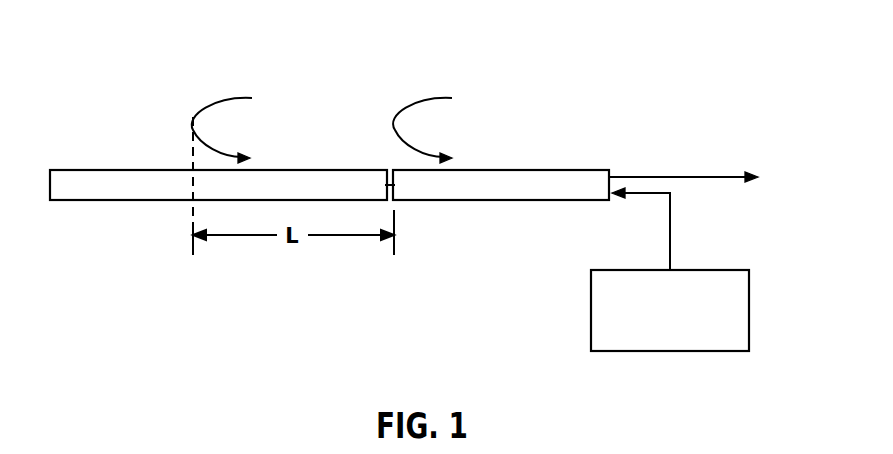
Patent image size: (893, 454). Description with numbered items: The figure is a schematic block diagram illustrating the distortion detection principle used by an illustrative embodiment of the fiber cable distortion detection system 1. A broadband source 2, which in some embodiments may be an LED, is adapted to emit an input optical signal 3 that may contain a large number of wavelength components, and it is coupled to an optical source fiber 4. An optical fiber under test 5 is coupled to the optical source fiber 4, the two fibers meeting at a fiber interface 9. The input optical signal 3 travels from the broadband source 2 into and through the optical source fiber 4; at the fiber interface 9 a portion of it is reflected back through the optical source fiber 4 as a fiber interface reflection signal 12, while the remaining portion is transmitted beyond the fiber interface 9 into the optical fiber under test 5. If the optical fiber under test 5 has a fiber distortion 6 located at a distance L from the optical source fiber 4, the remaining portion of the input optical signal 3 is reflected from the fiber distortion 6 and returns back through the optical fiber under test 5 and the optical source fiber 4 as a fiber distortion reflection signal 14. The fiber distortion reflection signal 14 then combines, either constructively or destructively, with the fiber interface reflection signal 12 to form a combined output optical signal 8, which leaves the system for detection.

The fiber cable distortion detection system 1 is at (591, 85).
The broadband source 2 is at (669, 352).
The input optical signal 3 is at (670, 230).
The optical source fiber 4 is at (500, 200).
The optical fiber under test 5 is at (307, 170).
The fiber distortion 6 is at (193, 186).
The combined output optical signal 8 is at (665, 177).
The fiber interface 9 is at (387, 185).
The fiber interface reflection signal 12 is at (438, 98).
The fiber distortion reflection signal 14 is at (232, 98).